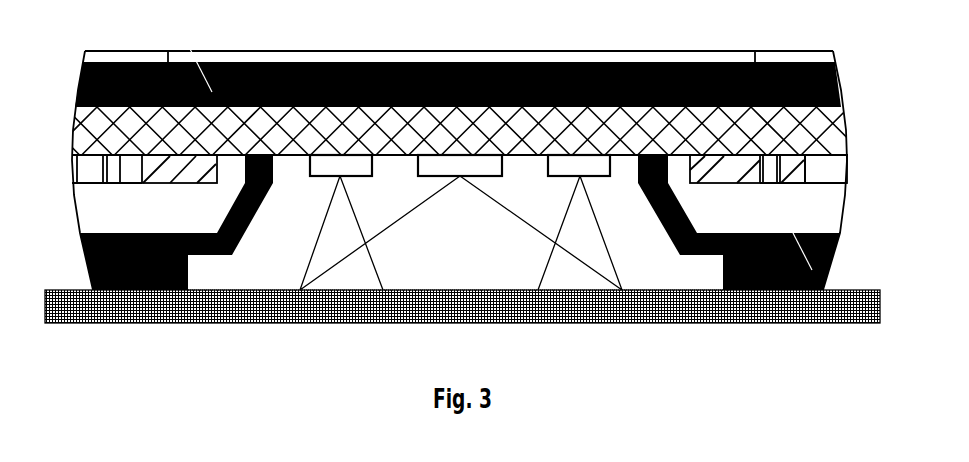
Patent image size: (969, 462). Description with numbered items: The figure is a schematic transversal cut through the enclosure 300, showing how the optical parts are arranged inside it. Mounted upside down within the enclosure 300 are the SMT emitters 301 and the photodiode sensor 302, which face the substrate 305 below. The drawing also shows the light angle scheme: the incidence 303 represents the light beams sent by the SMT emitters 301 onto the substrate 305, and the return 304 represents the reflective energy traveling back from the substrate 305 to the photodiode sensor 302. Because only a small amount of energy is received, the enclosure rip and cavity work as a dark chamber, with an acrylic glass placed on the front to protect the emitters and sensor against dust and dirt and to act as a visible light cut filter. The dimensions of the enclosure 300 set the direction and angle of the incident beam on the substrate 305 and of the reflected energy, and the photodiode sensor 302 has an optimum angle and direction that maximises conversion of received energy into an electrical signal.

The enclosure 300 is at (458, 152).
The SMT emitters 301 is at (459, 96).
The photodiode sensor 302 is at (429, 96).
The incidence 303 is at (469, 233).
The return 304 is at (459, 257).
The substrate 305 is at (462, 325).